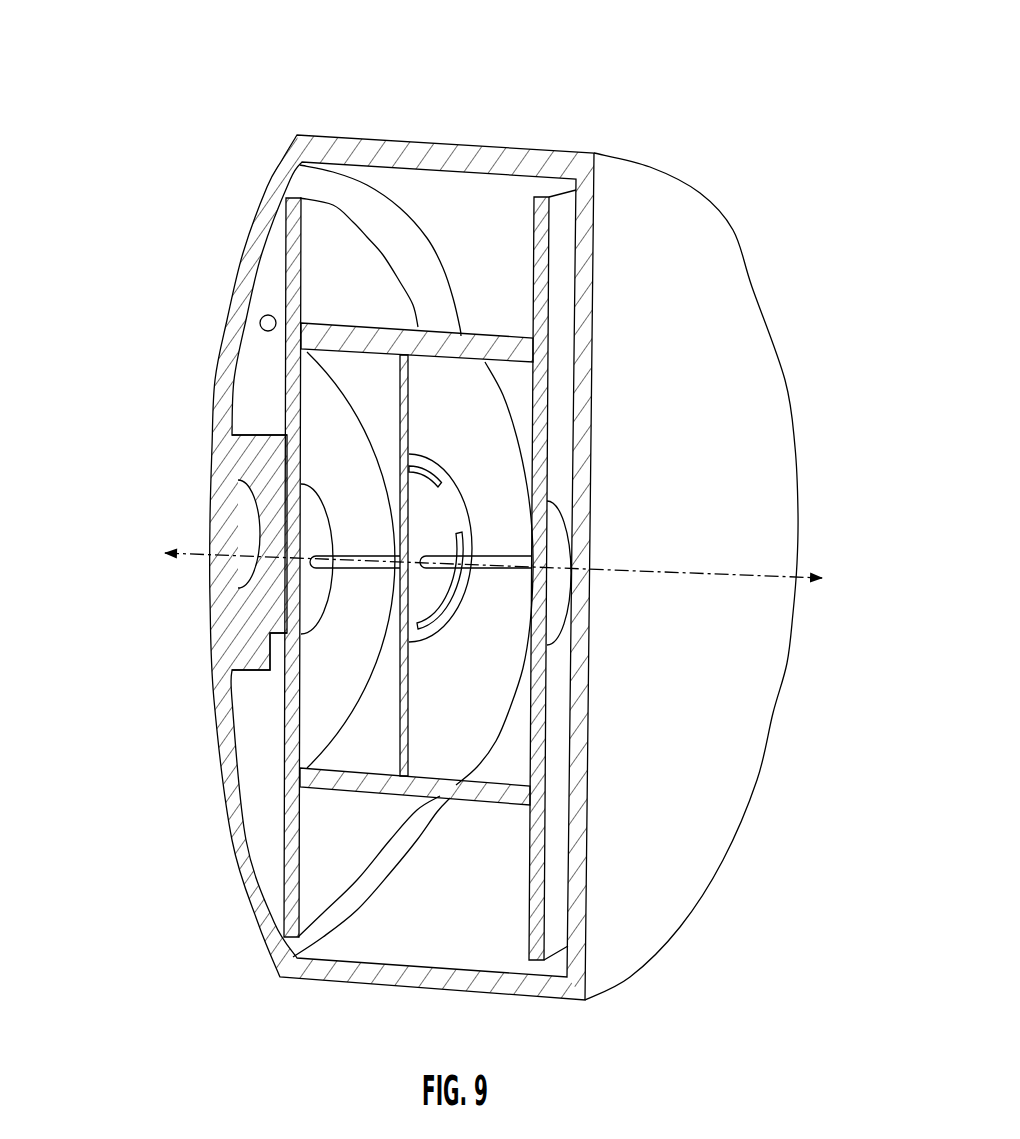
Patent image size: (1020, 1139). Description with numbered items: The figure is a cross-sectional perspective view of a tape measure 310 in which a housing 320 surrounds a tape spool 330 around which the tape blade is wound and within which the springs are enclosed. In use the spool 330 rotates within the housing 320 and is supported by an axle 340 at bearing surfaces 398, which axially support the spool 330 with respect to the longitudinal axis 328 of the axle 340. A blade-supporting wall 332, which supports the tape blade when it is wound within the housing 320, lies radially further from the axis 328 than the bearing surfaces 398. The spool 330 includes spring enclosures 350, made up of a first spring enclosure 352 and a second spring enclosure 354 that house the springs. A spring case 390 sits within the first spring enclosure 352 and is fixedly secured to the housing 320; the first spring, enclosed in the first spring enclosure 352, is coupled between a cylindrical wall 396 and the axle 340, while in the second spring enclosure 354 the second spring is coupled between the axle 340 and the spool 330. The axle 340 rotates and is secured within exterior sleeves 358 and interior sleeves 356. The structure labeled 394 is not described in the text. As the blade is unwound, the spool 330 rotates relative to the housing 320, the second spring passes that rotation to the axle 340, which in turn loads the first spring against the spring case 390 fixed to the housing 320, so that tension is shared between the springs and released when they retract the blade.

The tape measure 310 is at (495, 500).
The housing 320 is at (703, 194).
The longitudinal axis 328 is at (193, 558).
The tape spool 330 is at (355, 227).
The blade-supporting wall 332 is at (437, 328).
The axle 340 is at (546, 577).
The spring enclosures 350 is at (333, 437).
The first spring enclosure 352 is at (343, 687).
The second spring enclosure 354 is at (448, 407).
The interior sleeves 356 is at (433, 657).
The exterior sleeves 358 is at (282, 589).
The spring case 390 is at (327, 391).
The boss 394 is at (307, 687).
The cylindrical wall 396 is at (360, 378).
The bearing surfaces 398 is at (303, 504).